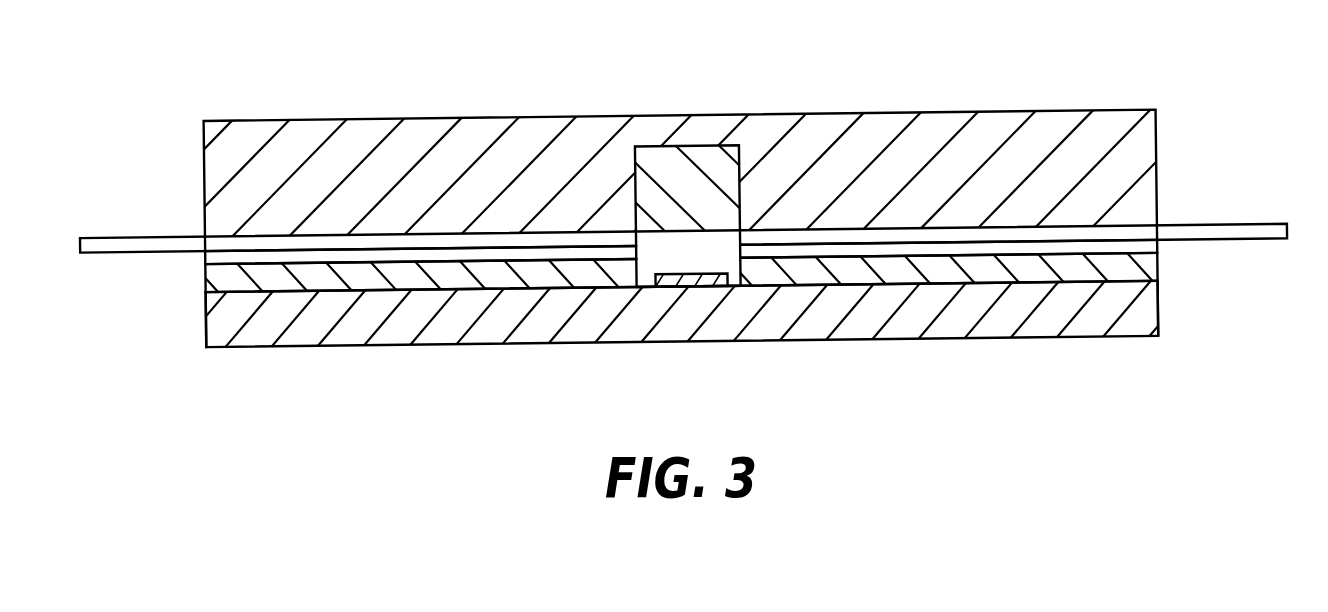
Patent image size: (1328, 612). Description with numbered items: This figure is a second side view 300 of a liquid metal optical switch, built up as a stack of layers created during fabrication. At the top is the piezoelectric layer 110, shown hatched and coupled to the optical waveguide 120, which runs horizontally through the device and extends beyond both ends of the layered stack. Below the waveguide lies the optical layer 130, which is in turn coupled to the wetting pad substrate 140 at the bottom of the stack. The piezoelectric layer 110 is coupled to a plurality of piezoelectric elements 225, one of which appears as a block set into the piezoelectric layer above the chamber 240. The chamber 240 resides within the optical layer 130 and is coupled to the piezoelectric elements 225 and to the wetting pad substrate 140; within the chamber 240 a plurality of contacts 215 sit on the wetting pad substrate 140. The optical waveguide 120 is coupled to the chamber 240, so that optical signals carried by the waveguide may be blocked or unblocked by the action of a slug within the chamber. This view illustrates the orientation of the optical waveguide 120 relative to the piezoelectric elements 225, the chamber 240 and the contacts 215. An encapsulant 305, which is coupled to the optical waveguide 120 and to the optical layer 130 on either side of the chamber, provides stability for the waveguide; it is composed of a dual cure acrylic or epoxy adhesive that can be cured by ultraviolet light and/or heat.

The second side view 300 is at (290, 67).
The piezoelectric layer 110 is at (205, 164).
The optical waveguide 120 is at (137, 237).
The optical layer 130 is at (208, 273).
The wetting pad substrate 140 is at (208, 333).
The piezoelectric elements 225 is at (710, 162).
The chamber 240 is at (675, 247).
The contacts 215 is at (710, 280).
The encapsulant 305 is at (315, 257).